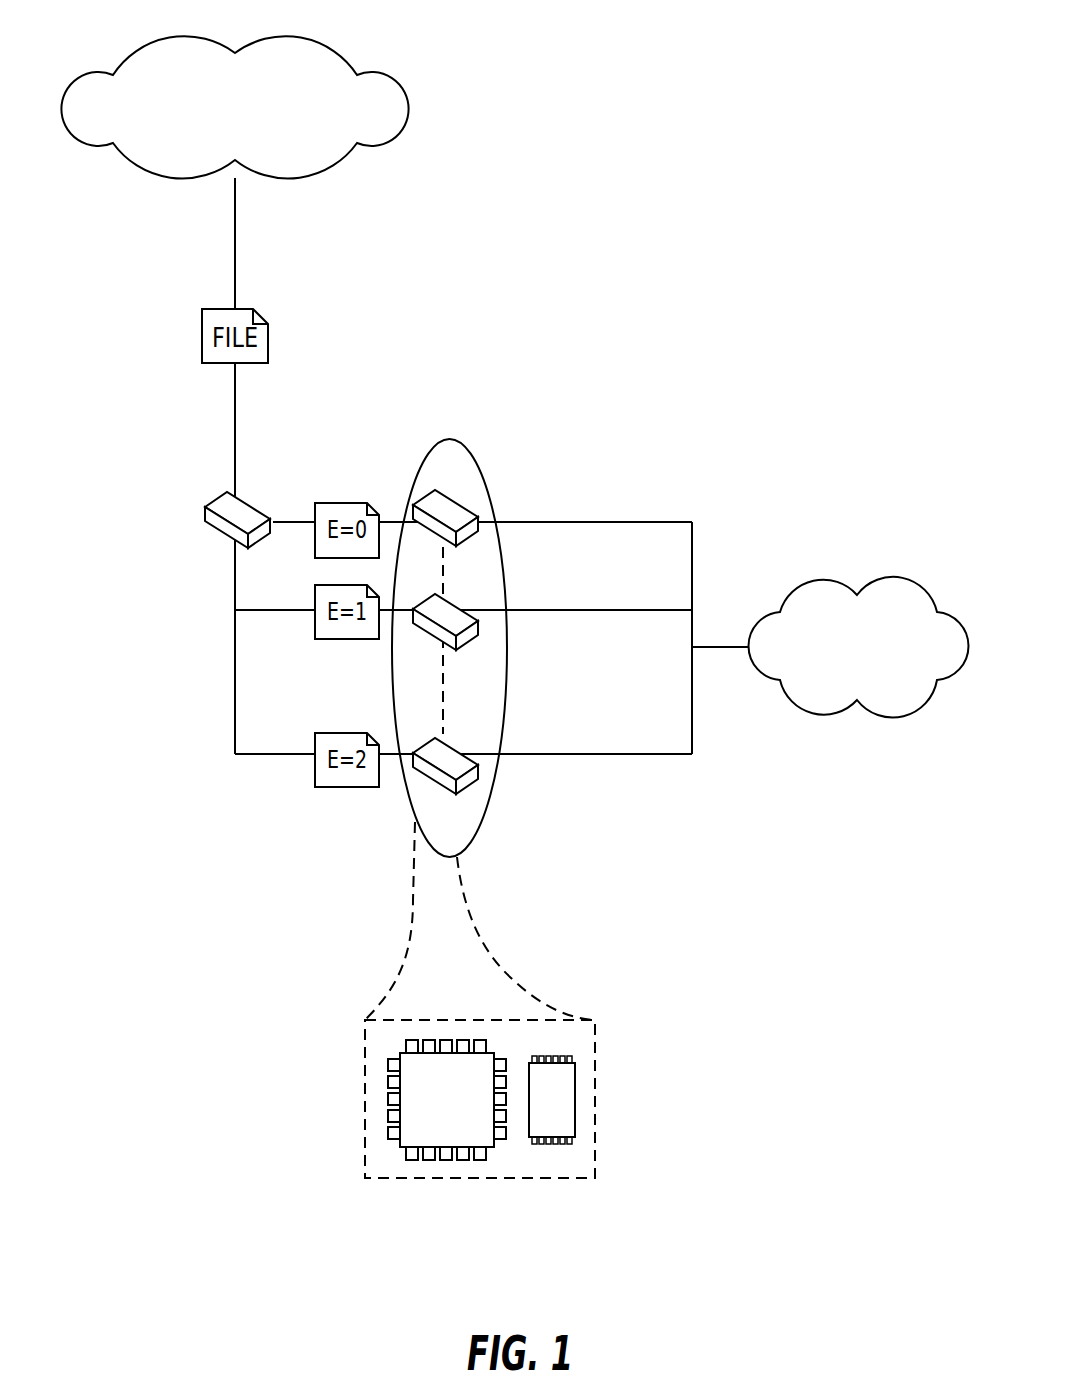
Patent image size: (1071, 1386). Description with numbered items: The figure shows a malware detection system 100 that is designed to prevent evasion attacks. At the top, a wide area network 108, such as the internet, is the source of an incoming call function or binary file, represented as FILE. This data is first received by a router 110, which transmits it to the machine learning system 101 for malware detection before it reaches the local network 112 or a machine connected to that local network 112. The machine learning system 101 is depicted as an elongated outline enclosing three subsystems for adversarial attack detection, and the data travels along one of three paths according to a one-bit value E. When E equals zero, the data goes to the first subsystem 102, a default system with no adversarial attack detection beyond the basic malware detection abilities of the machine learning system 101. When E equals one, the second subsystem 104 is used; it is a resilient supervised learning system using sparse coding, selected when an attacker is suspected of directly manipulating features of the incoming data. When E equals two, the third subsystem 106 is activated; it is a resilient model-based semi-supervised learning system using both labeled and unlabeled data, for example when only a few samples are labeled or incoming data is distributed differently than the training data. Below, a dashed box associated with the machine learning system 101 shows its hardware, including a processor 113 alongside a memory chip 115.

The malware detection system 100 is at (848, 38).
The machine learning system 101 is at (456, 440).
The first subsystem 102 is at (453, 498).
The second subsystem 104 is at (460, 600).
The third subsystem 106 is at (468, 782).
The wide area network 108 is at (285, 40).
The router 110 is at (207, 505).
The local network 112 is at (825, 578).
The processor 113 is at (390, 1062).
The memory 115 is at (575, 1097).